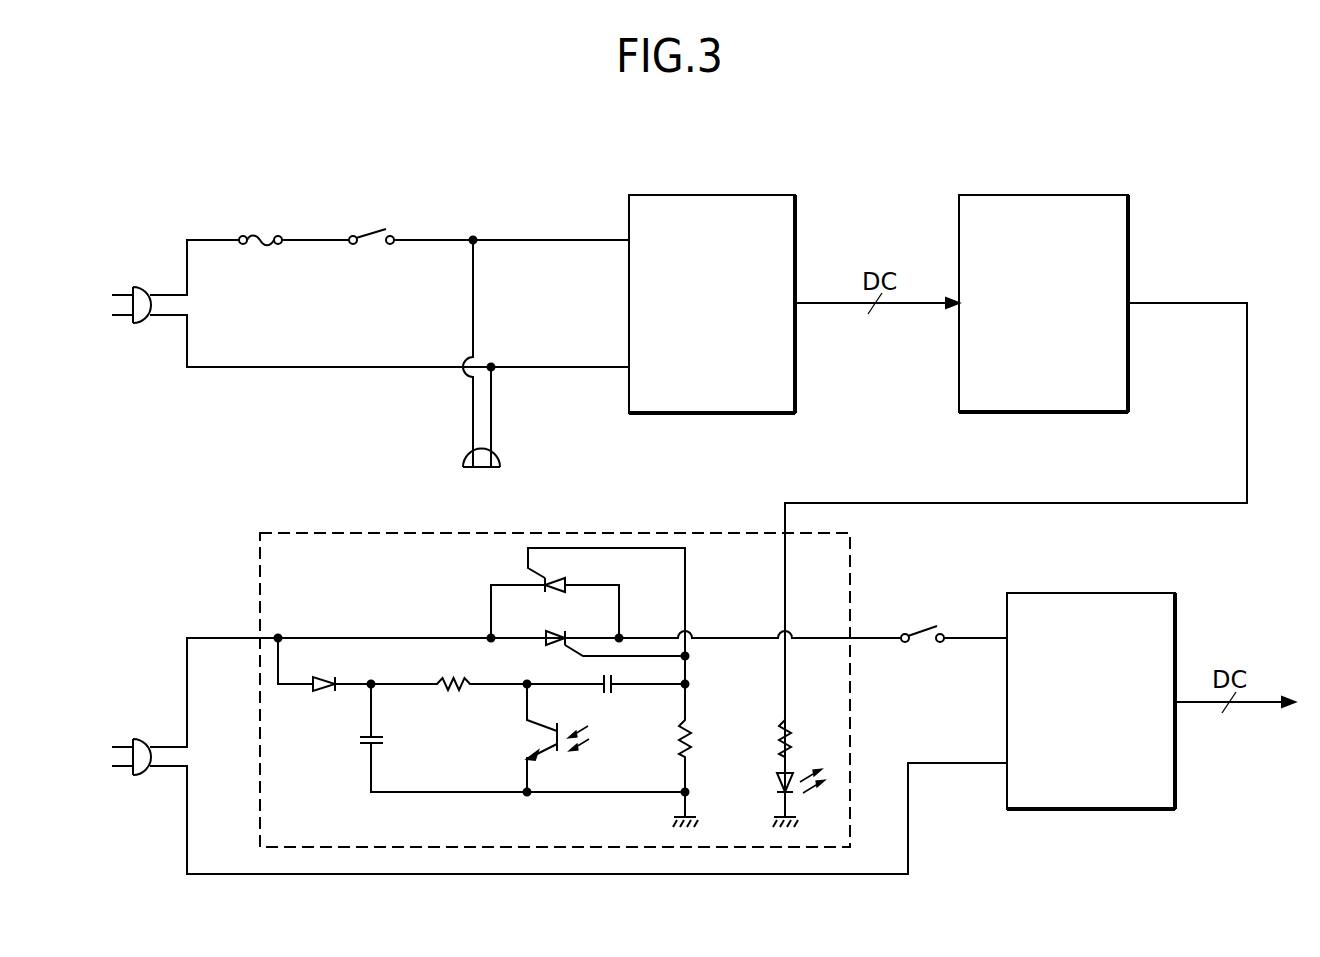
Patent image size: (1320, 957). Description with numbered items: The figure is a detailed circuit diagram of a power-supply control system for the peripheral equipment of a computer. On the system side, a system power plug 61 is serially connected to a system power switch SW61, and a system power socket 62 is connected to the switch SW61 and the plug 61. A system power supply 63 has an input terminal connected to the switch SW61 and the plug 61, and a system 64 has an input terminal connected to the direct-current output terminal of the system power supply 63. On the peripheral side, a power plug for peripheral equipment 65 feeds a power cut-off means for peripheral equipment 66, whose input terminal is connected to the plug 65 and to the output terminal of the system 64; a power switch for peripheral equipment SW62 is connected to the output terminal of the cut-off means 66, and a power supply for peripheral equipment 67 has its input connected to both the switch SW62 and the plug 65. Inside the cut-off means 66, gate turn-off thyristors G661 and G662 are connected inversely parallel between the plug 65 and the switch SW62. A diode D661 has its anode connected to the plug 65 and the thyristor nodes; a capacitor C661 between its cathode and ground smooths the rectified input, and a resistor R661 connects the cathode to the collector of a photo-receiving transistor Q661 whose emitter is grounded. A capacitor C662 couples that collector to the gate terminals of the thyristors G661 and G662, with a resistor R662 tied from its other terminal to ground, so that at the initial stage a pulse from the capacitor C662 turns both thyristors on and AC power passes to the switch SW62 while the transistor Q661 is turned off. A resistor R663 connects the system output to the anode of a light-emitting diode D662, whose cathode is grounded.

The system power plug 61 is at (137, 288).
The system power switch SW61 is at (372, 223).
The system power socket 62 is at (500, 462).
The system power supply 63 is at (712, 415).
The system 64 is at (1043, 413).
The power plug for peripheral equipment 65 is at (138, 745).
The power cut-off means for peripheral equipment 66 is at (260, 583).
The power supply for peripheral equipment 67 is at (1088, 590).
The power switch for peripheral equipment SW62 is at (925, 621).
The diode D661 is at (324, 664).
The resistor R661 is at (449, 671).
The capacitor C661 is at (524, 740).
The photo-receiving transistor Q661 is at (526, 738).
The gate turn-off thyristor G661 is at (588, 602).
The gate turn-off thyristor G662 is at (601, 631).
The capacitor C662 is at (608, 700).
The resistor R662 is at (650, 740).
The resistor R663 is at (748, 743).
The light-emitting diode D662 is at (765, 798).